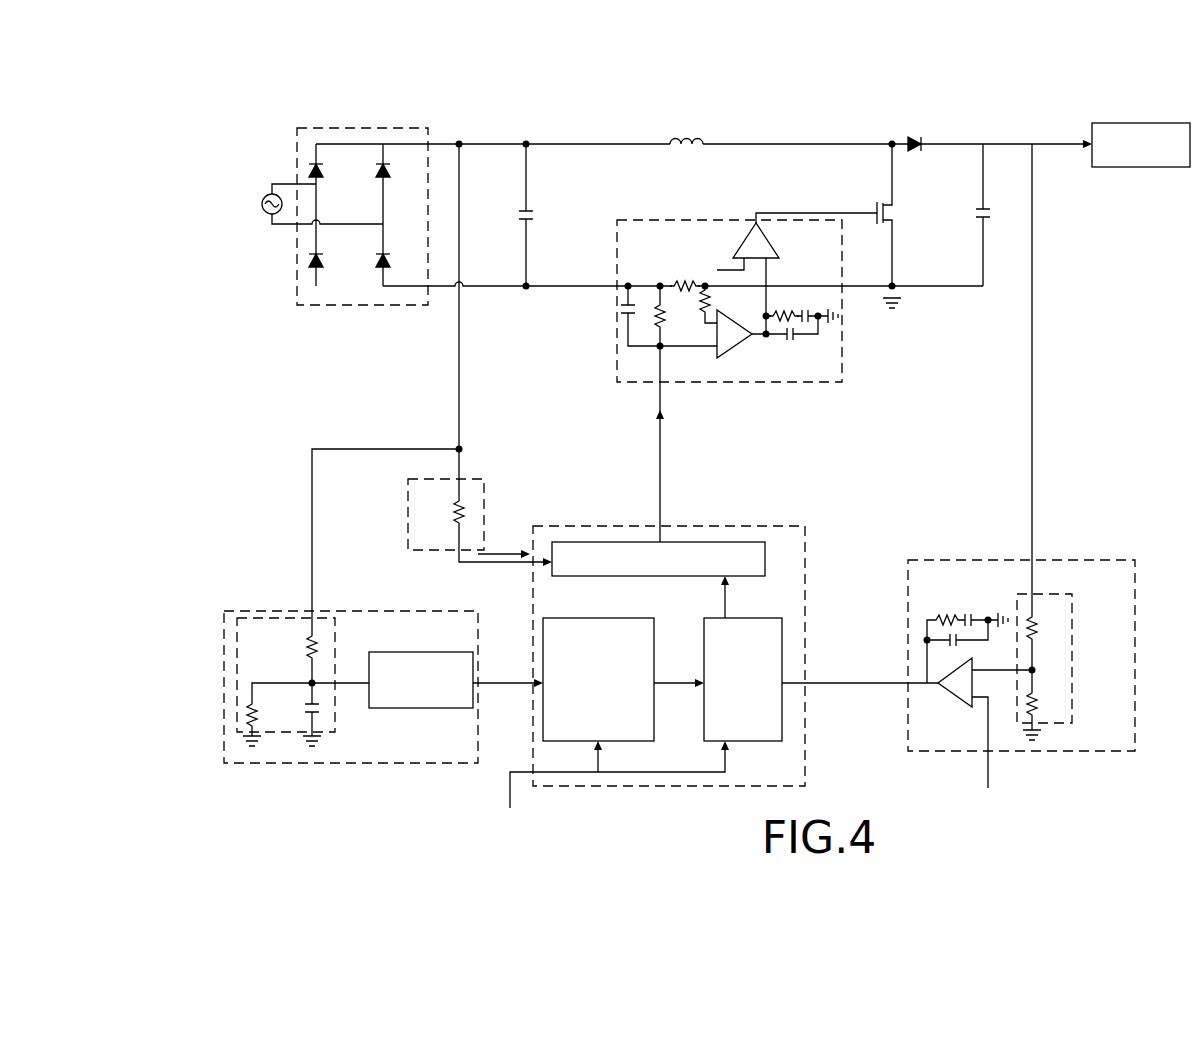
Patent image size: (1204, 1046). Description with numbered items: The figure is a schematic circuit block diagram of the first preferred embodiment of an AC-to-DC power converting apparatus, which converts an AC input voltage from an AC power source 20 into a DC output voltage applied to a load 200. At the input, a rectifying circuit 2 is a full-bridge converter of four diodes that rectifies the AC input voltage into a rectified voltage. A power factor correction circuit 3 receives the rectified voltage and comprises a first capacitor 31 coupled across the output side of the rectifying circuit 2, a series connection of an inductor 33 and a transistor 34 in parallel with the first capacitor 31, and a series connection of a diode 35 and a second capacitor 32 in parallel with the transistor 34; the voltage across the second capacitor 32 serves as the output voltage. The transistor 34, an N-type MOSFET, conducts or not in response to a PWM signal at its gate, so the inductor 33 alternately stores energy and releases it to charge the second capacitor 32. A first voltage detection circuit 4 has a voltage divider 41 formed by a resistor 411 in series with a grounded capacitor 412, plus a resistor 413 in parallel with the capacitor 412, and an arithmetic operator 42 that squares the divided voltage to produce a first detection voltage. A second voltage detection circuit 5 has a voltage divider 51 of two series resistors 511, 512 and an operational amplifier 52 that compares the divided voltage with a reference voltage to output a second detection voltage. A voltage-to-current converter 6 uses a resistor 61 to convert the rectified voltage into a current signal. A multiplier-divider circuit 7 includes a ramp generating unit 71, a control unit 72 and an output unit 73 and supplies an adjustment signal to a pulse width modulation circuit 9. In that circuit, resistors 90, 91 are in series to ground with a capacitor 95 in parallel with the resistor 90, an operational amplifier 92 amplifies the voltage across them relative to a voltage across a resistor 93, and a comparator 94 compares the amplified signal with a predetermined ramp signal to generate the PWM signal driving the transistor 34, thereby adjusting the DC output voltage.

The rectifying circuit 2 is at (392, 128).
The AC power source 20 is at (263, 198).
The power factor correction circuit 3 is at (735, 259).
The first capacitor 31 is at (521, 213).
The second capacitor 32 is at (990, 218).
The inductor 33 is at (690, 142).
The transistor 34 is at (898, 218).
The diode 35 is at (910, 140).
The load 200 is at (1150, 123).
The pulse width modulation circuit 9 is at (739, 361).
The resistor 90 is at (657, 322).
The resistor 91 is at (684, 296).
The operational amplifier 92 is at (742, 346).
The resistor 93 is at (712, 292).
The comparator 94 is at (768, 233).
The capacitor 95 is at (622, 318).
The voltage-to-current converter 6 is at (432, 524).
The resistor 61 is at (455, 518).
The multiplier-divider circuit 7 is at (716, 690).
The ramp generating unit 71 is at (592, 618).
The control unit 72 is at (784, 727).
The output unit 73 is at (767, 550).
The first voltage detection circuit 4 is at (342, 718).
The voltage divider 41 is at (255, 697).
The resistor 411 is at (305, 650).
The capacitor 412 is at (305, 705).
The resistor 413 is at (248, 712).
The arithmetic operator 42 is at (388, 708).
The second voltage detection circuit 5 is at (1046, 476).
The voltage divider 51 is at (1073, 667).
The resistor 511 is at (1036, 624).
The resistor 512 is at (1036, 712).
The operational amplifier 52 is at (950, 699).